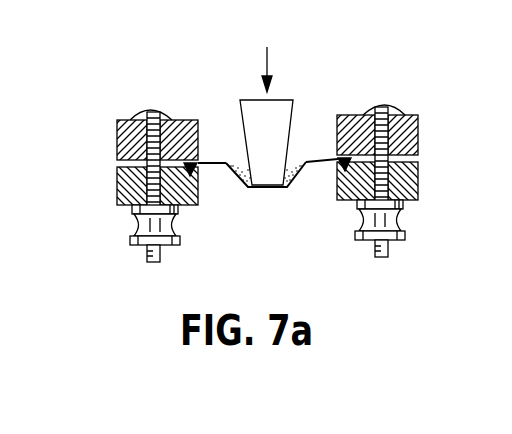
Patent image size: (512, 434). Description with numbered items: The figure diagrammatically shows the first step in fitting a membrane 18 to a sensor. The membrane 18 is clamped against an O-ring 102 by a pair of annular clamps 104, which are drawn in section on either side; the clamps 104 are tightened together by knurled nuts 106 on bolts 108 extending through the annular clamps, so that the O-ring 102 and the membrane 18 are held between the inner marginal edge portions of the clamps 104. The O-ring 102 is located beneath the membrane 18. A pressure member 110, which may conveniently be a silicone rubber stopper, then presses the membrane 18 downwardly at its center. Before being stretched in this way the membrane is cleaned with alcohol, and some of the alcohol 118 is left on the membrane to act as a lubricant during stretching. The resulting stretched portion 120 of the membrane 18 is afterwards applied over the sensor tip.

The membrane 18 is at (200, 163).
The alcohol 118 is at (305, 160).
The pressure member 110 is at (283, 135).
The stretched portion 120 is at (290, 178).
The O-ring 102 is at (200, 170).
The annular clamps 104 is at (420, 182).
The knurled nuts 106 is at (178, 224).
The bolts 108 is at (147, 257).